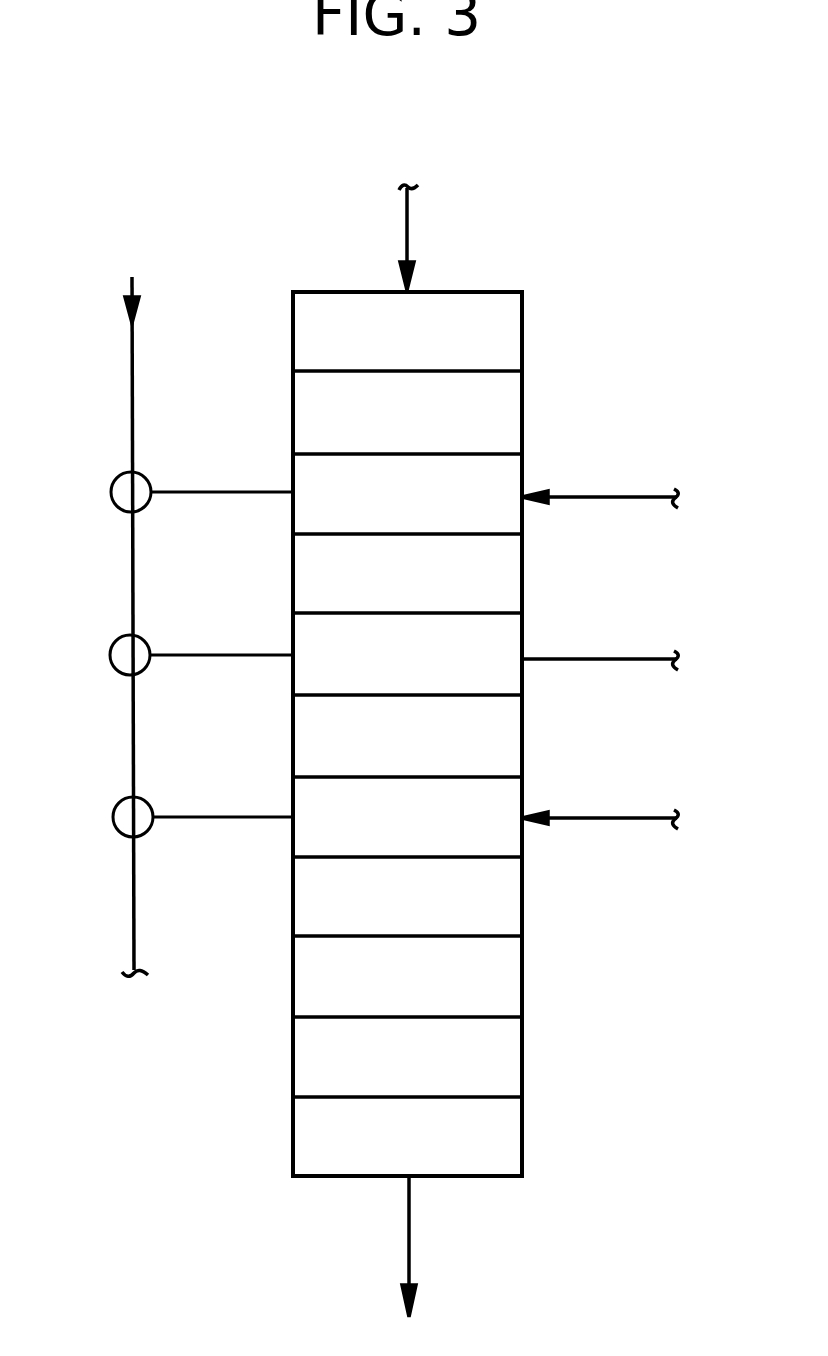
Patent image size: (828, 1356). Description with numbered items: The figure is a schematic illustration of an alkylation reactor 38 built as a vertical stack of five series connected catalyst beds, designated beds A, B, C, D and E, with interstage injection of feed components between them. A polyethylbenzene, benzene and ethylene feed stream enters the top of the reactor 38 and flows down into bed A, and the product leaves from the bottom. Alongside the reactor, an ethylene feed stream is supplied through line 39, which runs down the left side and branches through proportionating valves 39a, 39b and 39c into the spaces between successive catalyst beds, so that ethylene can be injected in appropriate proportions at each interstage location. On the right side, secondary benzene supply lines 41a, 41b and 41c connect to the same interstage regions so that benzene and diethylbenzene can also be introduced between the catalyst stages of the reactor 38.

The reactor 38 is at (522, 336).
The line 39 is at (132, 381).
The proportionating valve 39a is at (140, 477).
The proportionating valve 39b is at (139, 640).
The proportionating valve 39c is at (142, 803).
The secondary benzene supply line 41a is at (600, 476).
The secondary benzene supply line 41b is at (600, 637).
The secondary benzene supply line 41c is at (600, 798).